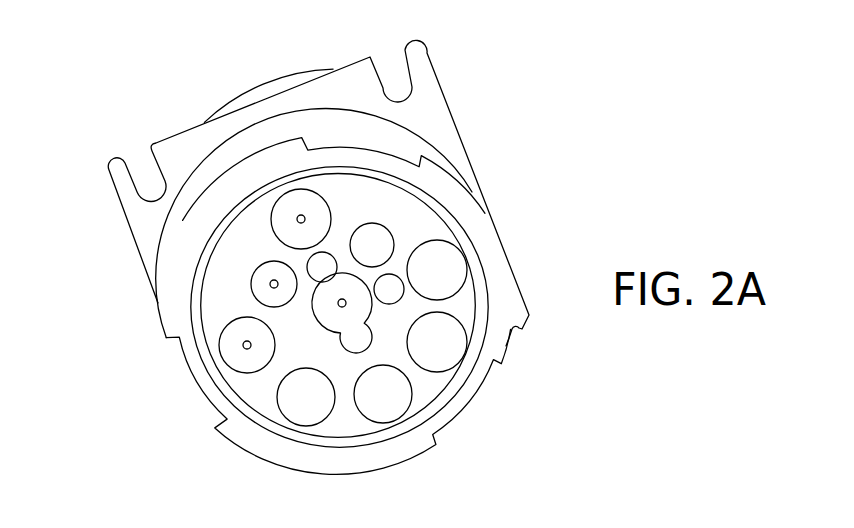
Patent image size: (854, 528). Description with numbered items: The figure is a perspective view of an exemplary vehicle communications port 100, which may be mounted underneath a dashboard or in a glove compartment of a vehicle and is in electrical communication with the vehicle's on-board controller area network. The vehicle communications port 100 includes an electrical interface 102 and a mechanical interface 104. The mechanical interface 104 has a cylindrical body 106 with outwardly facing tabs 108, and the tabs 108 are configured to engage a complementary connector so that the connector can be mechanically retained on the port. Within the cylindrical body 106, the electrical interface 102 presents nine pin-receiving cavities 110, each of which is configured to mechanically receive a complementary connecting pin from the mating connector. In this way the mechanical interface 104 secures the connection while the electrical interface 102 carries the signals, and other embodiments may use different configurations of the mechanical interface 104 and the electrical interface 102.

The vehicle communications port 100 is at (637, 124).
The electrical interface 102 is at (400, 342).
The mechanical interface 104 is at (452, 134).
The cylindrical body 106 is at (233, 204).
The outwardly facing tabs 108 is at (353, 148).
The pin-receiving cavities 110 is at (462, 286).